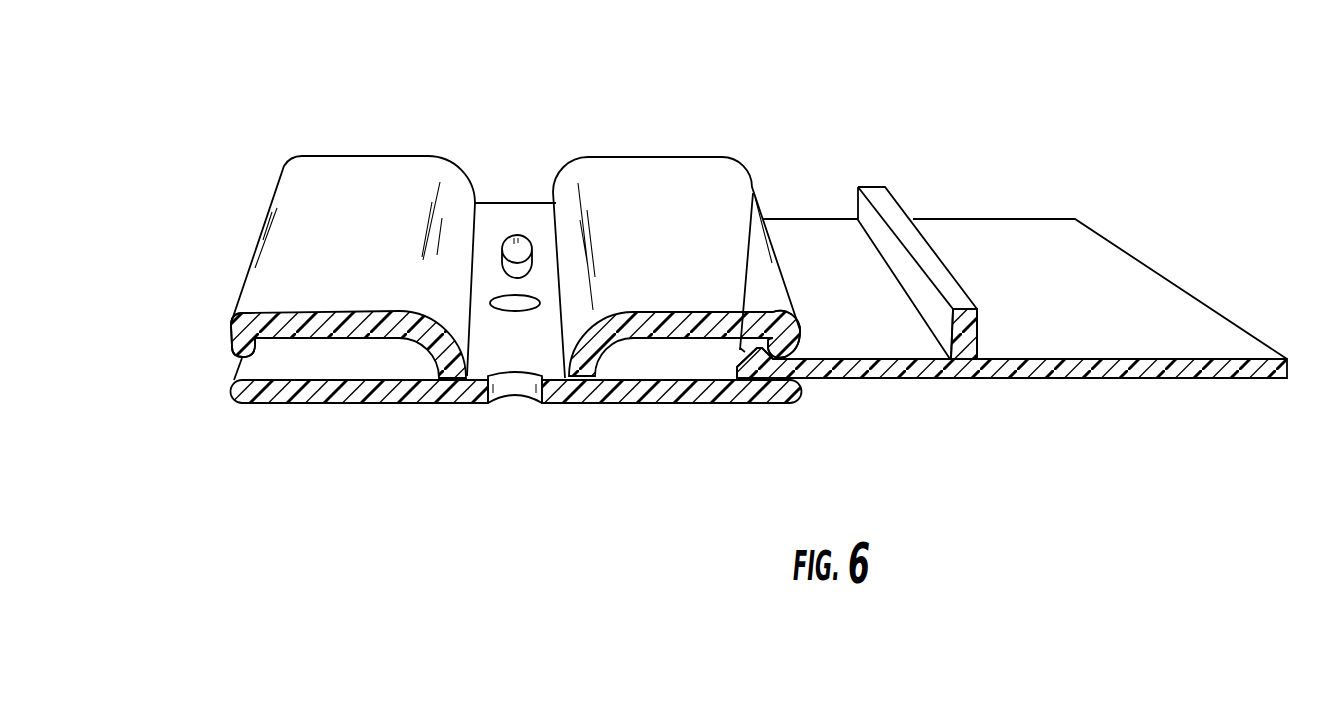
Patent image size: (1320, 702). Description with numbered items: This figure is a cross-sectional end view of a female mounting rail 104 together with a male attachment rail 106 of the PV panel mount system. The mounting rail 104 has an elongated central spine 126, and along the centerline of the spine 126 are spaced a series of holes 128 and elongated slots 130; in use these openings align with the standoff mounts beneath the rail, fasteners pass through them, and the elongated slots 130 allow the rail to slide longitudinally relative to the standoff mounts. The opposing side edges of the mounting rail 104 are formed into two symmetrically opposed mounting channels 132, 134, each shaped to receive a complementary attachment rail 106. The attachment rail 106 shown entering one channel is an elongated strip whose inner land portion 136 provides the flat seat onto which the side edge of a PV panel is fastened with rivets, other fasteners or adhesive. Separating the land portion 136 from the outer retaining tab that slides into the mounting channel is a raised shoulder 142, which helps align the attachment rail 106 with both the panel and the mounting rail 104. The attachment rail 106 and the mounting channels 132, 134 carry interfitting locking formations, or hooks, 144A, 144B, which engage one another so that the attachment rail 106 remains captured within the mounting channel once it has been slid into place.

The mounting rail 104 is at (554, 288).
The attachment rail 106 is at (1012, 239).
The spine 126 is at (587, 285).
The hole 128 is at (519, 312).
The elongated slot 130 is at (525, 240).
The mounting channel 132 is at (333, 407).
The mounting channel 134 is at (680, 362).
The land portion 136 is at (1092, 285).
The raised shoulder 142 is at (885, 187).
The locking formation 144A is at (743, 353).
The locking formation 144B is at (227, 347).